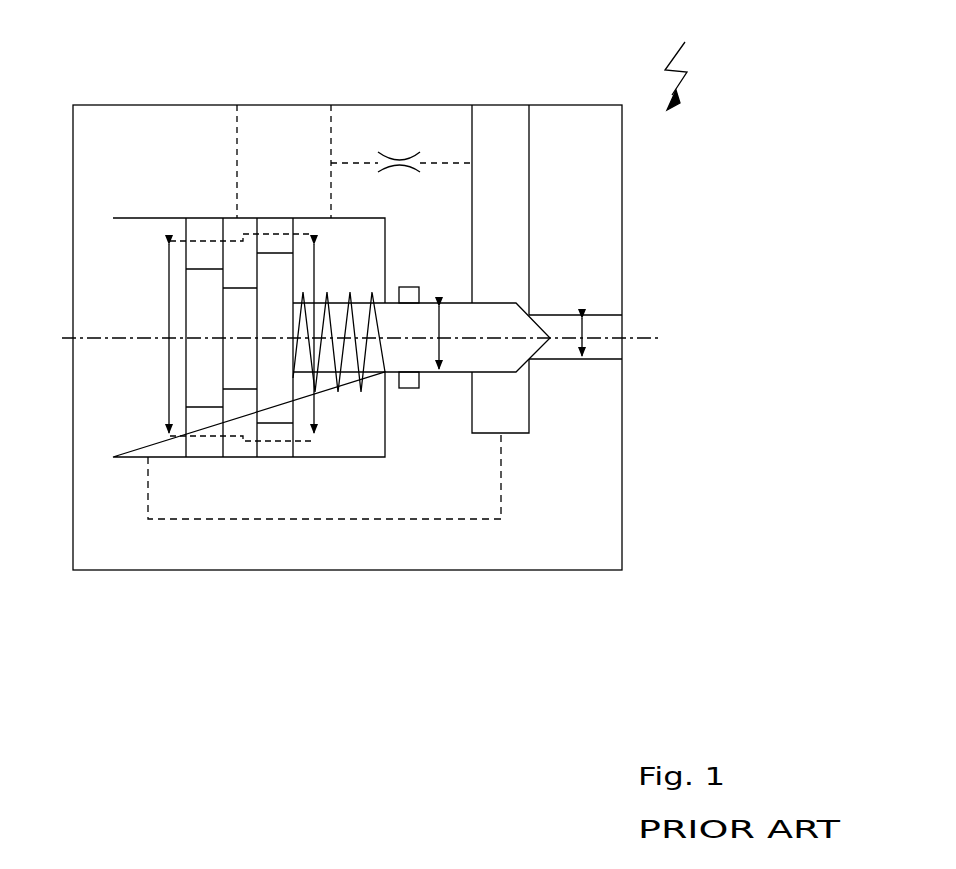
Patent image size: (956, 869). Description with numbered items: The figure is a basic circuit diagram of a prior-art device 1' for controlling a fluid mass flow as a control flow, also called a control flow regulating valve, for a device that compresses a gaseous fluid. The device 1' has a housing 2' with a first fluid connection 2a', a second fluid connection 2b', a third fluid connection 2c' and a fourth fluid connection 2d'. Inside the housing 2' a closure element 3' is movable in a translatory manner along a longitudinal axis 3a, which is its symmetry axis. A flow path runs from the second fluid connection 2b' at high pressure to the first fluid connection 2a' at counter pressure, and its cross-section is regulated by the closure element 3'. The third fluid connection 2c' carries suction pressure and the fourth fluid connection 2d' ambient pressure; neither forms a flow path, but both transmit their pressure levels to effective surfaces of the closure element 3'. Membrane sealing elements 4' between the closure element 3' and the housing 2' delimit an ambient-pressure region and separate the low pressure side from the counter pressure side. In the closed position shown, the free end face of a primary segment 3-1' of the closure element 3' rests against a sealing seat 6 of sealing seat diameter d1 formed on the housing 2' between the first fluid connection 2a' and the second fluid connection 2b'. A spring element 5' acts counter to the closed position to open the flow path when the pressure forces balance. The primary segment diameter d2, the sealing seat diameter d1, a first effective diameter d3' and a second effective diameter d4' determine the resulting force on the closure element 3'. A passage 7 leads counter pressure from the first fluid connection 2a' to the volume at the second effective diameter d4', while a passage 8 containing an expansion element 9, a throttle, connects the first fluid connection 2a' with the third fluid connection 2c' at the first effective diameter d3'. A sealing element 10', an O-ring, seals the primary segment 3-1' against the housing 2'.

The device 1' is at (682, 60).
The housing 2' is at (420, 341).
The first fluid connection 2a' is at (537, 220).
The second fluid connection 2b' is at (655, 377).
The third fluid connection 2c' is at (379, 113).
The fourth fluid connection 2d' is at (287, 113).
The closure element 3' is at (249, 232).
The primary segment 3-1' is at (437, 473).
The longitudinal axis 3a is at (655, 338).
The membrane sealing elements 4' is at (220, 545).
The spring element 5' is at (376, 468).
The sealing seat 6 is at (537, 358).
The first fluid connection 7 is at (305, 519).
The second fluid connection 8 is at (438, 162).
The expansion element 9 is at (412, 152).
The sealing element 10' is at (457, 465).
The sealing seat diameter d1 is at (583, 333).
The primary segment diameter d2 is at (440, 325).
The first effective diameter d3' is at (359, 444).
The second effective diameter d4' is at (102, 444).